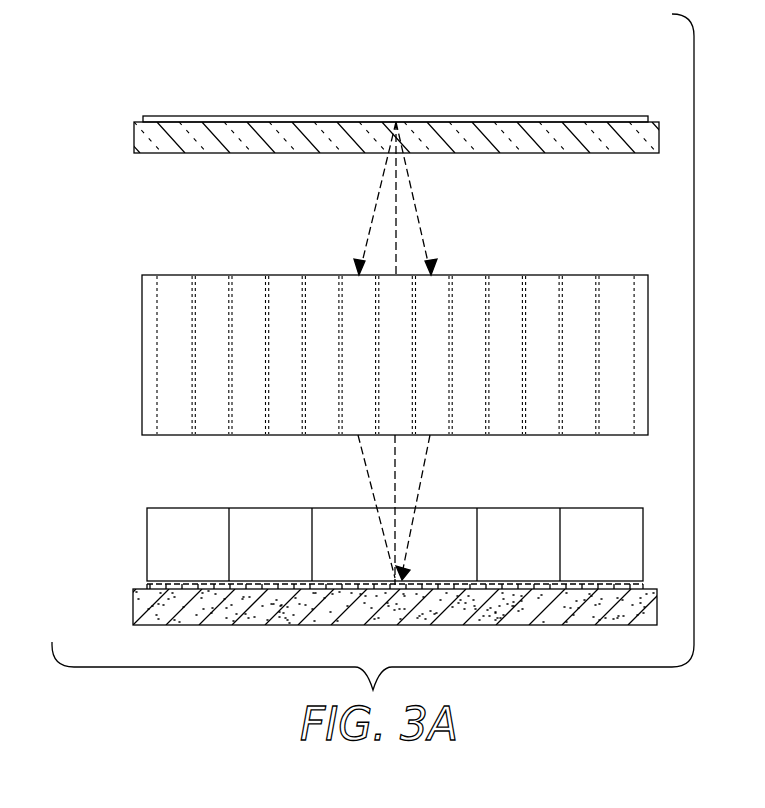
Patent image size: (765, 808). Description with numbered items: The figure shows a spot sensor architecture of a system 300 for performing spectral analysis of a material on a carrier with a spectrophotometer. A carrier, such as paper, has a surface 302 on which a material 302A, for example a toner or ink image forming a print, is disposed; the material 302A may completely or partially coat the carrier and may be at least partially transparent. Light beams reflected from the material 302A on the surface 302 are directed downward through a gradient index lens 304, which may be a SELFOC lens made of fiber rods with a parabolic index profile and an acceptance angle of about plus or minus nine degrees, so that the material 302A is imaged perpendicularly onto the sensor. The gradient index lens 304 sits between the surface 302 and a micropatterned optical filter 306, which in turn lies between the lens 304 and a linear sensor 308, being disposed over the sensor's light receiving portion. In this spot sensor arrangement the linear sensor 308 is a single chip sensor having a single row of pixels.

The system 300 is at (225, 65).
The carrier surface 302 is at (530, 153).
The material 302A is at (388, 130).
The gradient index lens 304 is at (540, 274).
The micropatterned optical filter 306 is at (147, 546).
The linear sensor 308 is at (147, 587).